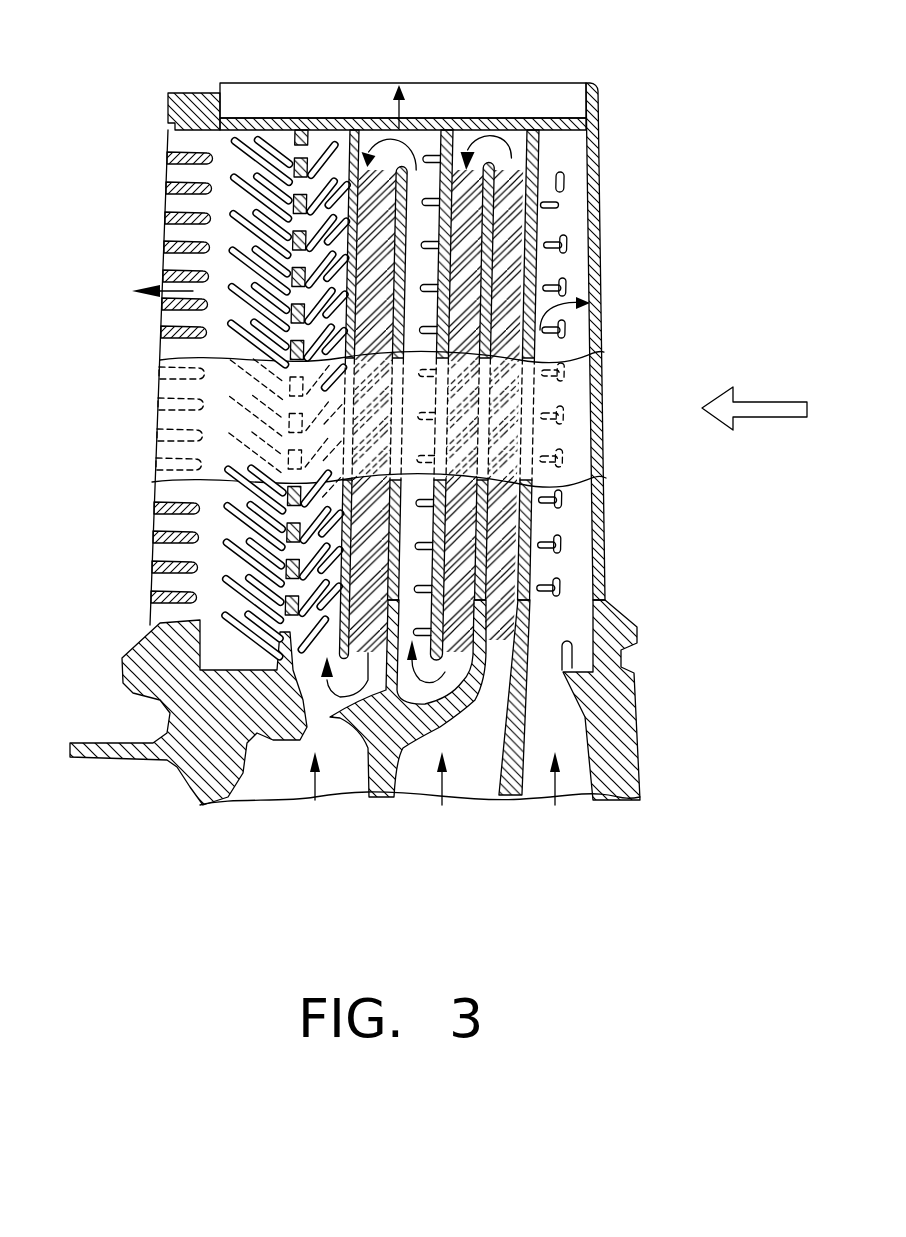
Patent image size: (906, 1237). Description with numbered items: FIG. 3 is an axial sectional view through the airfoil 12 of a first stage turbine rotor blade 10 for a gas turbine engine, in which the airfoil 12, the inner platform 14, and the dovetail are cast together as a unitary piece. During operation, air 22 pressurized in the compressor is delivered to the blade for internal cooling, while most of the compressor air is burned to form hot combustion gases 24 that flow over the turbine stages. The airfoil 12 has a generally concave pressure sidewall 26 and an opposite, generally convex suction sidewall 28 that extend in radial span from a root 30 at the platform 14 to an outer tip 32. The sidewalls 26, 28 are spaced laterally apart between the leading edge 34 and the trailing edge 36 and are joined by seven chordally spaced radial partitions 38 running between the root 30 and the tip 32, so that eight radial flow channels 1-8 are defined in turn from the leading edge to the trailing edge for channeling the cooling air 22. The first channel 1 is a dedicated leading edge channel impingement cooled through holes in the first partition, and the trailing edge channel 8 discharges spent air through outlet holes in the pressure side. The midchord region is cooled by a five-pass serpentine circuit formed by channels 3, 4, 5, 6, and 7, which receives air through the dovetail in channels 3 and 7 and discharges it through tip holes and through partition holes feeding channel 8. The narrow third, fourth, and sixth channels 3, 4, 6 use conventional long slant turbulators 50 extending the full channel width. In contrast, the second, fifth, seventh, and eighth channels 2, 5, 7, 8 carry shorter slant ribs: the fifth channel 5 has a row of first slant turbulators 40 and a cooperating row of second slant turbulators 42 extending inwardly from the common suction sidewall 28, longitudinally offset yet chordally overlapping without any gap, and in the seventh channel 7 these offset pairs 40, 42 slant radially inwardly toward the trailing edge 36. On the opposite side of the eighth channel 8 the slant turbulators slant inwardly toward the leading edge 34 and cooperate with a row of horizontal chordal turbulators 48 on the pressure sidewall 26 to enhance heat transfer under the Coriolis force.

The first channel 1 is at (585, 177).
The second channel 2 is at (552, 167).
The third channel 3 is at (512, 155).
The fourth channel 4 is at (466, 140).
The fifth channel 5 is at (438, 194).
The sixth channel 6 is at (395, 176).
The seventh channel 7 is at (320, 140).
The trailing edge channel 8 is at (238, 197).
The turbine rotor blade 10 is at (138, 138).
The airfoil 12 is at (606, 150).
The inner platform 14 is at (123, 657).
The air 22 is at (315, 798).
The combustion gases 24 is at (773, 400).
The pressure sidewall 26 is at (183, 493).
The suction sidewall 28 is at (162, 433).
The root 30 is at (613, 620).
The outer tip 32 is at (323, 83).
The leading edge 34 is at (600, 283).
The trailing edge 36 is at (167, 198).
The radial partitions 38 is at (458, 115).
The first slant turbulators 40 is at (226, 543).
The second slant turbulators 42 is at (259, 580).
The chordal turbulators 48 is at (568, 537).
The conventional slant turbulators 50 is at (452, 718).